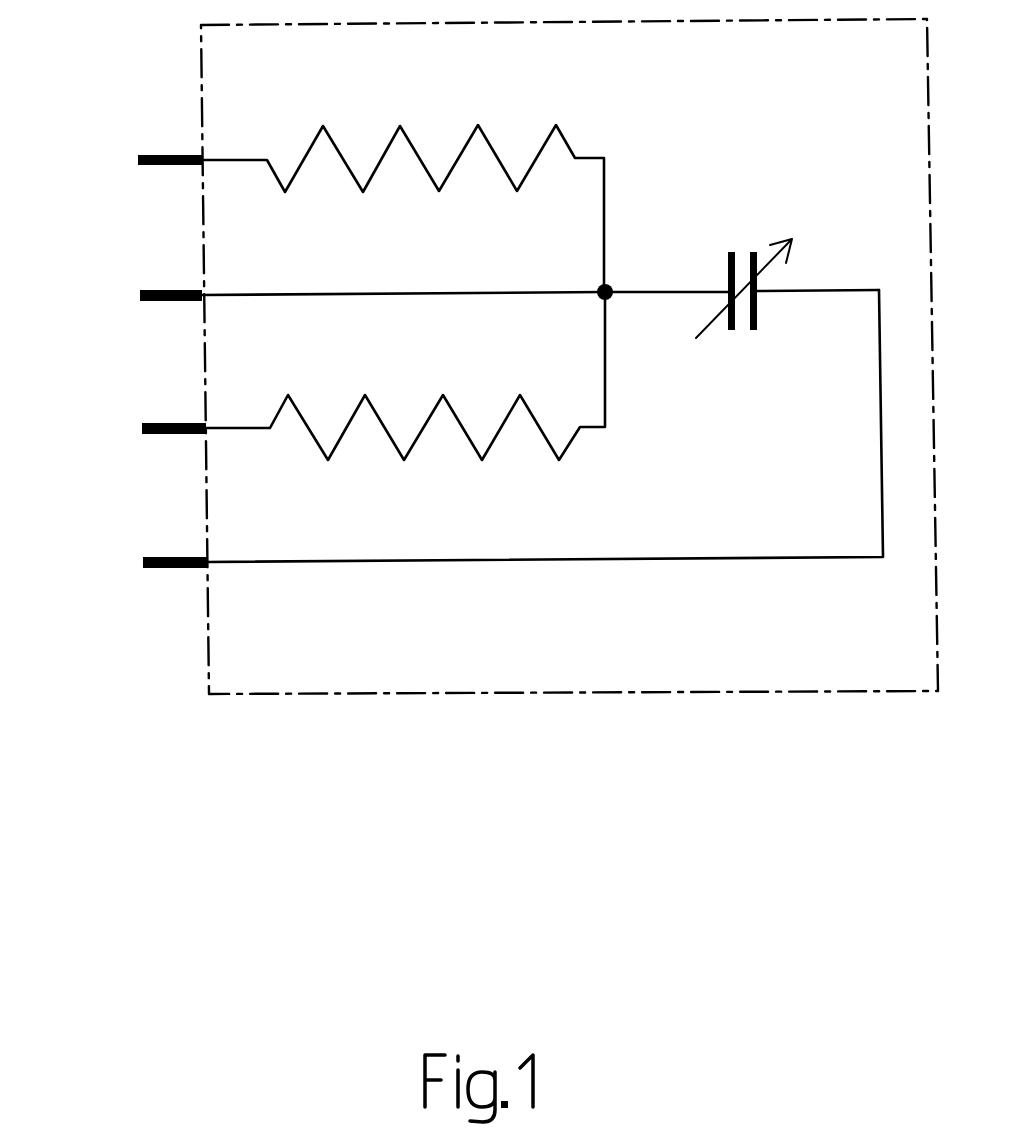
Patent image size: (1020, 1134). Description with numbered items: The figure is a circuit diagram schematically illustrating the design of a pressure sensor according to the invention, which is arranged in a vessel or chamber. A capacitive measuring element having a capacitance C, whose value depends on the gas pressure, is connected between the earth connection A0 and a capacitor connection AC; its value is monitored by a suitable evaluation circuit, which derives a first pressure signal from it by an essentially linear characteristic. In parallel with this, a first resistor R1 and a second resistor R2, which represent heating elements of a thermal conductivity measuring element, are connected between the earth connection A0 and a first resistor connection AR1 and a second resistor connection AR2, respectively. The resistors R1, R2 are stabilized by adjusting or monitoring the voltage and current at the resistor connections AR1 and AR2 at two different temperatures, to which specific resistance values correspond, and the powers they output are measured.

The first resistor R1 is at (421, 70).
The second resistor R2 is at (406, 524).
The capacitance C is at (754, 399).
The first resistor connection AR1 is at (40, 177).
The earth connection A0 is at (64, 293).
The second resistor connection AR2 is at (43, 445).
The capacitor connection AC is at (44, 578).